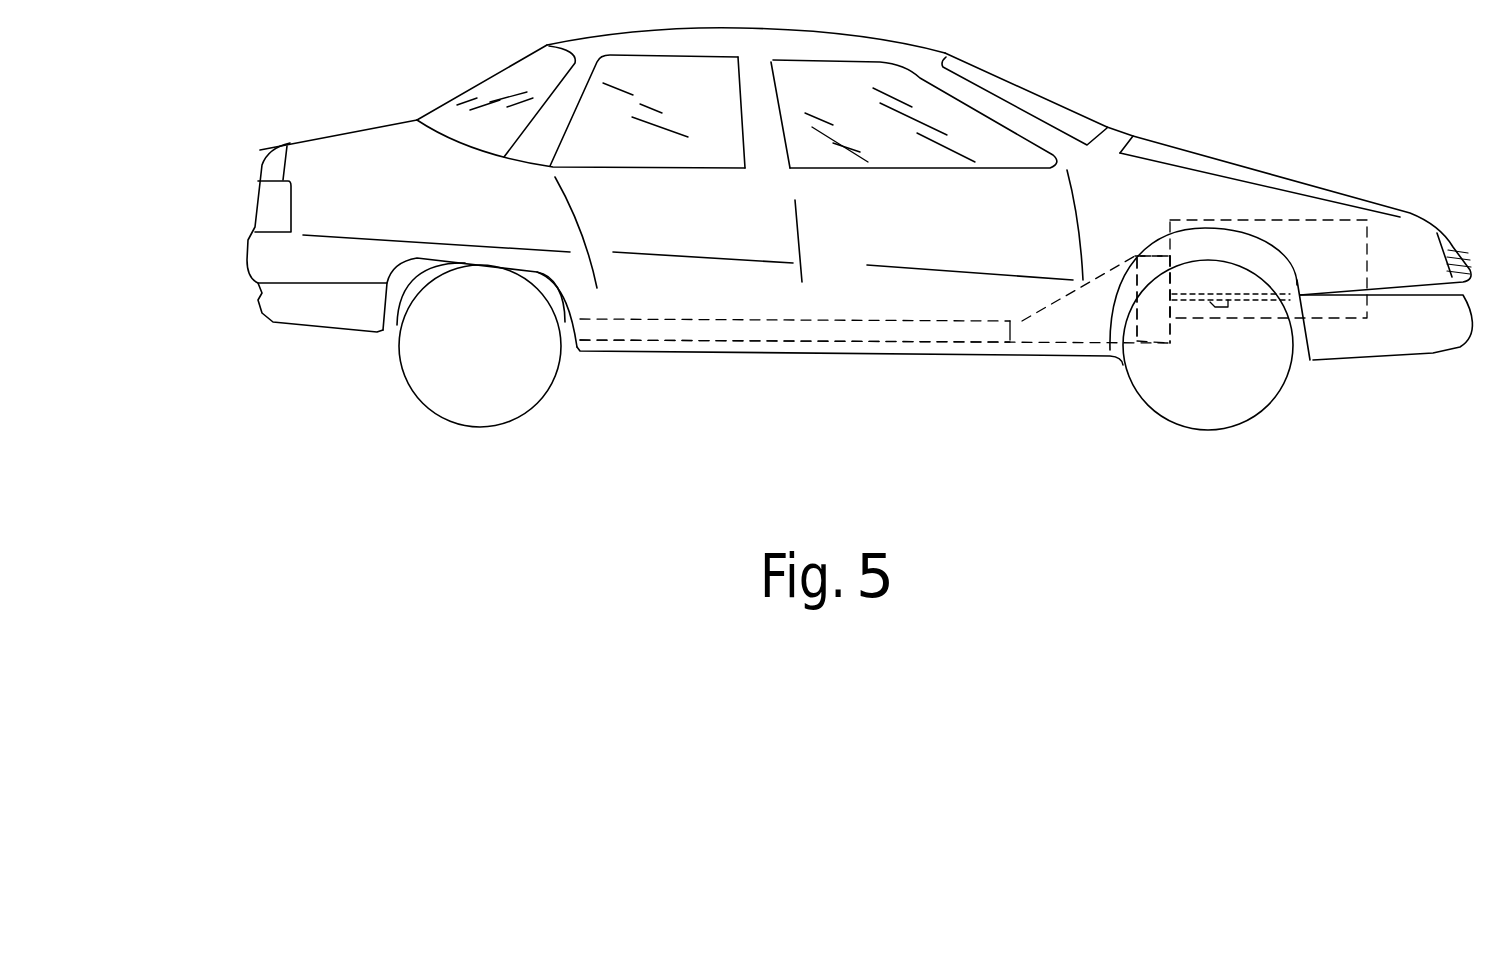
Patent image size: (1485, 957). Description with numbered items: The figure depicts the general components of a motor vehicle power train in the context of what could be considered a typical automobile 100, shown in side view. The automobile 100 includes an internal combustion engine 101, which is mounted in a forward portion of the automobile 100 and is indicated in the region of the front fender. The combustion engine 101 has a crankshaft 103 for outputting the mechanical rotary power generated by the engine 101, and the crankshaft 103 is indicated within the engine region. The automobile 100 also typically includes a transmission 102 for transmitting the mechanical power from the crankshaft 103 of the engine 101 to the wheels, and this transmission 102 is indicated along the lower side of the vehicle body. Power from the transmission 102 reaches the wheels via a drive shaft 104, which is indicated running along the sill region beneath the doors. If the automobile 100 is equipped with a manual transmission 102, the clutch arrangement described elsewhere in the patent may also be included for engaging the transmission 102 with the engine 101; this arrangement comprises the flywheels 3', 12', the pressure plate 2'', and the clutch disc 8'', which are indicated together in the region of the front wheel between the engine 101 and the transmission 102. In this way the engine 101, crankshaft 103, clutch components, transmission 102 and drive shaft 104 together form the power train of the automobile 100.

The automobile 100 is at (284, 484).
The internal combustion engine 101 is at (1298, 285).
The transmission 102 is at (1075, 327).
The crankshaft 103 is at (1226, 309).
The drive shaft 104 is at (803, 341).
The flywheel 3' is at (1099, 400).
The flywheel 12' is at (1122, 399).
The pressure plate 2'' is at (1143, 441).
The clutch disc 8'' is at (1178, 399).